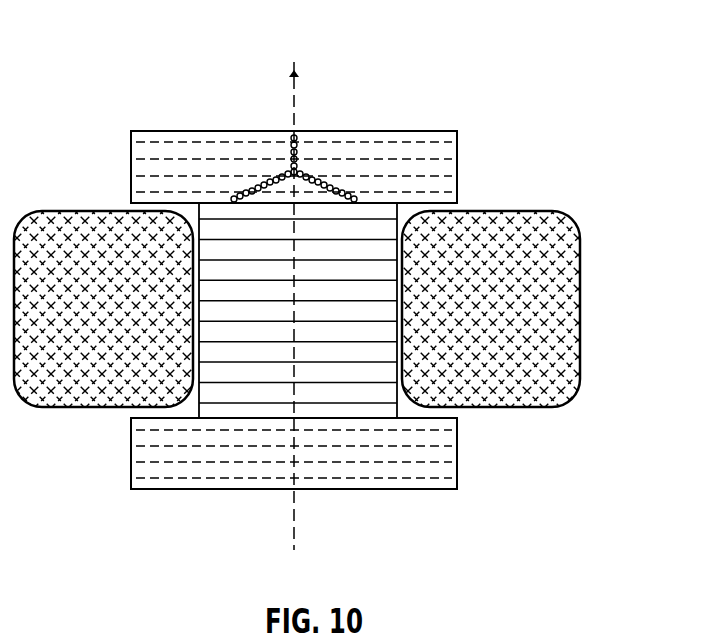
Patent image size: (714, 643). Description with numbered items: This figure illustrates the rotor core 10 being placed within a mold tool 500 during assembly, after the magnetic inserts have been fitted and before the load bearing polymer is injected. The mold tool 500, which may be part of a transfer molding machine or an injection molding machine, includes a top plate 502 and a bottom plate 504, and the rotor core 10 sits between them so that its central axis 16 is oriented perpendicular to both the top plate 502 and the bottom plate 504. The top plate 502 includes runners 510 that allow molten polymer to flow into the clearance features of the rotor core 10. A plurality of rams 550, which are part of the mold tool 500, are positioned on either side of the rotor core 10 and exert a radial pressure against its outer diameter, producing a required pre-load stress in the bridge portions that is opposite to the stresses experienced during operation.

The mold tool 500 is at (566, 60).
The top plate 502 is at (432, 138).
The bottom plate 504 is at (447, 450).
The rotor core 10 is at (252, 390).
The central axis 16 is at (294, 522).
The runners 510 is at (326, 188).
The rams 550 is at (84, 218).